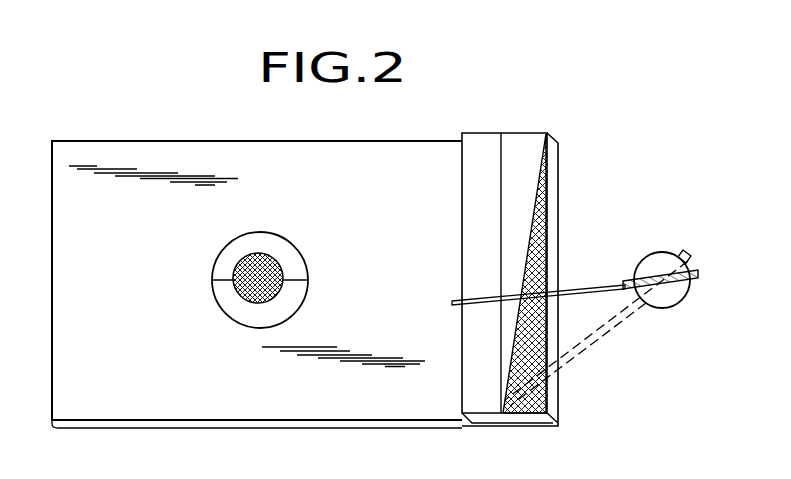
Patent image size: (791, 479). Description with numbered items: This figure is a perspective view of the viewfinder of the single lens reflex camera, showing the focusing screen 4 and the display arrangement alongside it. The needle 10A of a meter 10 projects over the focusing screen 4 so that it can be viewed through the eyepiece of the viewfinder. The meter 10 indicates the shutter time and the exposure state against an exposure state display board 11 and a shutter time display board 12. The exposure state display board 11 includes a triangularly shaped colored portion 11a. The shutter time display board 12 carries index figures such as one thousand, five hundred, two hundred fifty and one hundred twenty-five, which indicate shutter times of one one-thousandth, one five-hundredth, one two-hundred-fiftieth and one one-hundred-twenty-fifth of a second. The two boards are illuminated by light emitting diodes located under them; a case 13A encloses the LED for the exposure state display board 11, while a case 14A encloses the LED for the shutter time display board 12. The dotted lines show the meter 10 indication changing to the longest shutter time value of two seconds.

The focusing screen 4 is at (178, 428).
The meter 10 is at (657, 253).
The needle 10A is at (595, 285).
The exposure state display board 11 is at (520, 425).
The triangularly shaped colored portion 11a is at (551, 191).
The shutter time display board 12 is at (462, 387).
The case 13A is at (542, 426).
The case 14A is at (478, 424).